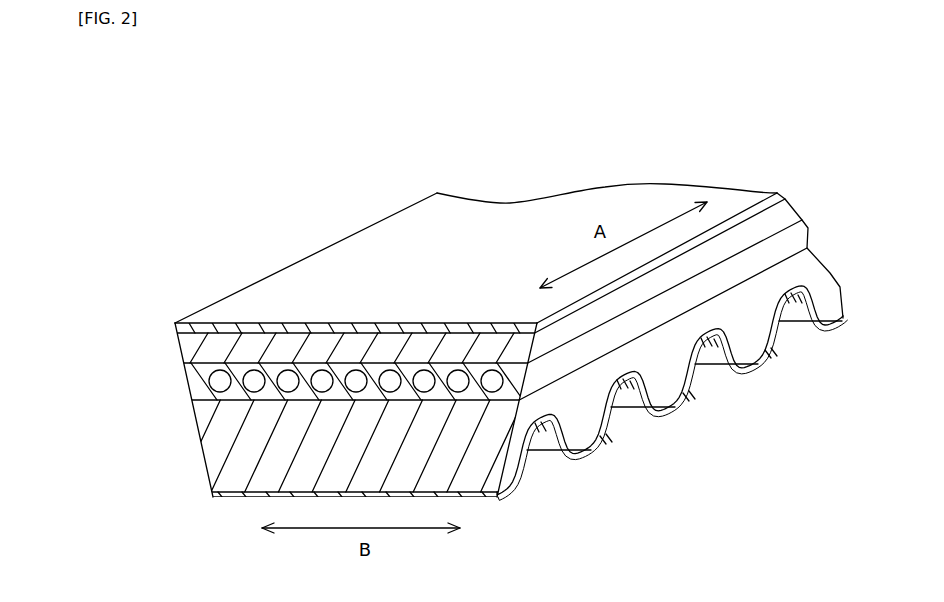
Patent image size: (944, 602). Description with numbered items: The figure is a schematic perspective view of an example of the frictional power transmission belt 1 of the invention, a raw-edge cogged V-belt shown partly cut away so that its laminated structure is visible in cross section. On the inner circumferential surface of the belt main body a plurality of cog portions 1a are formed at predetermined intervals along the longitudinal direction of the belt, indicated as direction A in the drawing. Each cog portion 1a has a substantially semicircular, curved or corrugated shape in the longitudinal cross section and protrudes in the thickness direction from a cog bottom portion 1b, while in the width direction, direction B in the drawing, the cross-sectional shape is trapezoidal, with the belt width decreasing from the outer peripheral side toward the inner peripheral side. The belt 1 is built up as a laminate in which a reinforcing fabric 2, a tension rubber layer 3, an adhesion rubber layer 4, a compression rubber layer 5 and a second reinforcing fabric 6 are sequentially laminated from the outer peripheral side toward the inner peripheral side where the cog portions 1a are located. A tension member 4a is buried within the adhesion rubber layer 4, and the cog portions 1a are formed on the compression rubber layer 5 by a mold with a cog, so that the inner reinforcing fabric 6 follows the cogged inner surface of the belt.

The frictional power transmission belt 1 is at (740, 143).
The cog portion 1a is at (605, 442).
The cog bottom portion 1b is at (625, 387).
The reinforcing fabric 2 is at (270, 283).
The tension rubber layer 3 is at (180, 345).
The adhesion rubber layer 4 is at (190, 383).
The tension member 4a is at (247, 371).
The compression rubber layer 5 is at (213, 445).
The reinforcing fabric 6 is at (228, 503).